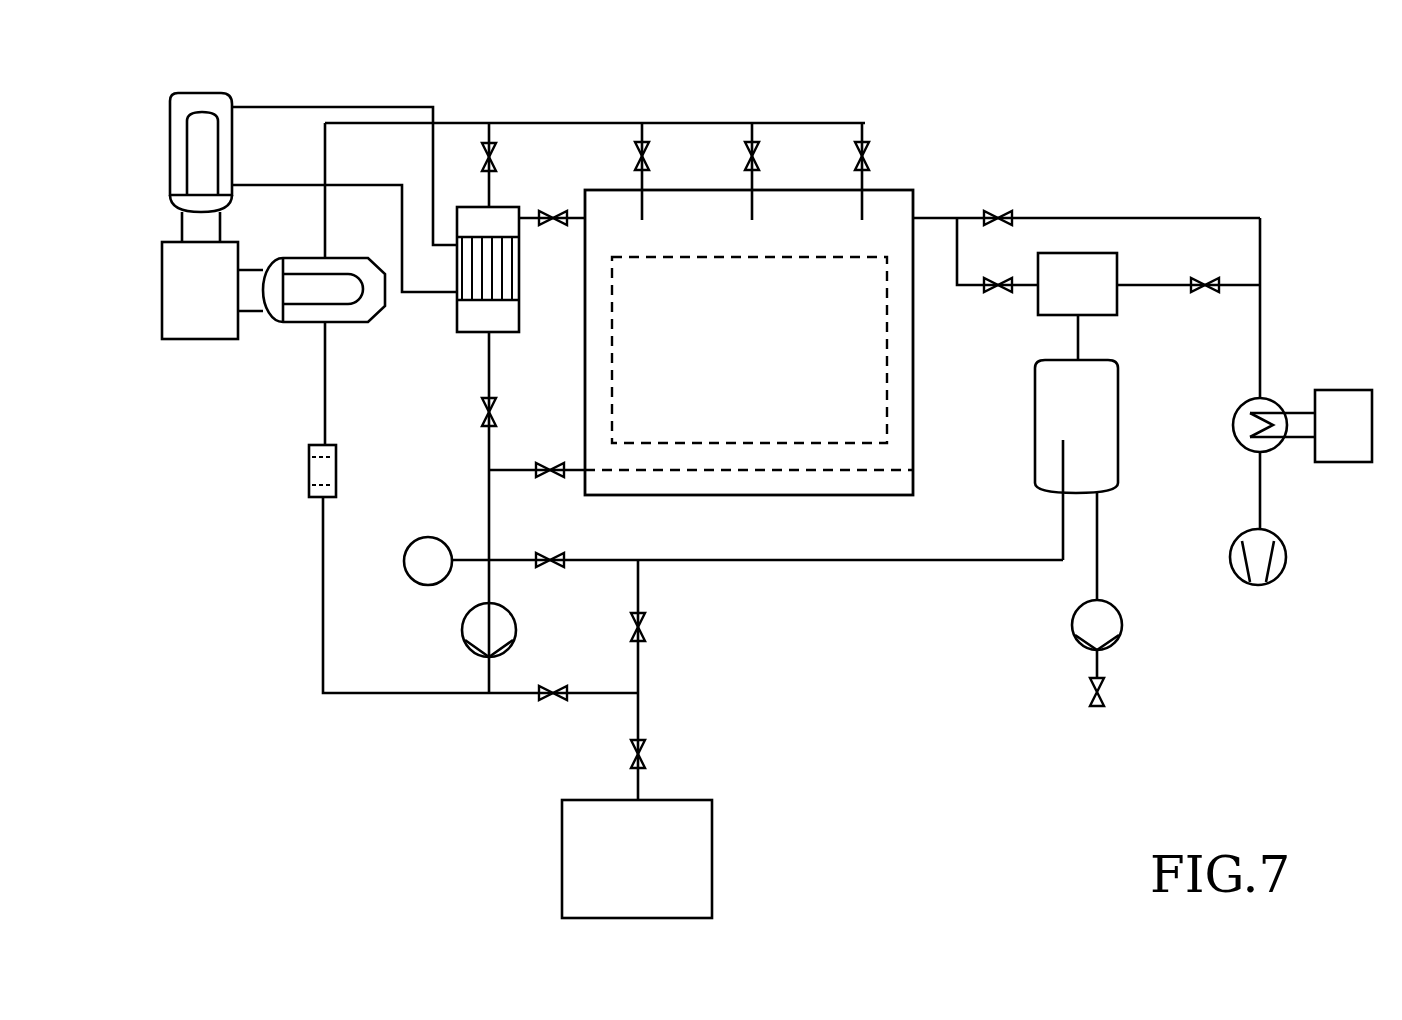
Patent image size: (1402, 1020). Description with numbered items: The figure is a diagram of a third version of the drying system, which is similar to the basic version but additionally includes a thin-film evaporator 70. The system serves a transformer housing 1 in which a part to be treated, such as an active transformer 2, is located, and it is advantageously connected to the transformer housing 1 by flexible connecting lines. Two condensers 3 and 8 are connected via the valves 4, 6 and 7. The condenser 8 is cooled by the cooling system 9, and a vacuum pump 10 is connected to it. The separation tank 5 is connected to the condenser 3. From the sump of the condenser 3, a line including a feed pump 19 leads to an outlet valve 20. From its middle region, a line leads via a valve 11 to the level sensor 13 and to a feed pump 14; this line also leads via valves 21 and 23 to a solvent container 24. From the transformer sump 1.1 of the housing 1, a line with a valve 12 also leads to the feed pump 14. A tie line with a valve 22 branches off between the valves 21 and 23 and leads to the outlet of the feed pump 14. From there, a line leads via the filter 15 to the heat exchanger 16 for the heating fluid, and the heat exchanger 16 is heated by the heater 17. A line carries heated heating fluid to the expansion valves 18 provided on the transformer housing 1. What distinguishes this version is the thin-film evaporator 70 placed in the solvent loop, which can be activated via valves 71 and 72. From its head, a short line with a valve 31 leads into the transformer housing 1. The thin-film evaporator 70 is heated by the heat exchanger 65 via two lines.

The transformer housing 1 is at (913, 355).
The transformer sump 1.1 is at (718, 482).
The active transformer 2 is at (608, 372).
The condenser 3 is at (1108, 300).
The valve 4 is at (998, 296).
The separation tank 5 is at (1112, 432).
The valve 6 is at (1205, 296).
The valve 7 is at (998, 208).
The condenser 8 is at (1233, 425).
The cooling system 9 is at (1343, 396).
The vacuum pump 10 is at (1230, 557).
The valve 11 is at (548, 574).
The valve 12 is at (552, 457).
The level sensor 13 is at (405, 565).
The feed pump 14 is at (462, 628).
The filter 15 is at (338, 472).
The heat exchanger 16 is at (340, 288).
The heater 17 is at (200, 322).
The expansion valves 18 is at (634, 158).
The feed pump 19 is at (1112, 628).
The outlet valve 20 is at (1105, 695).
The valve 21 is at (646, 628).
The valve 22 is at (551, 706).
The valve 23 is at (630, 755).
The solvent container 24 is at (672, 822).
The valve 31 is at (553, 230).
The heat exchanger 65 is at (203, 135).
The thin-film evaporator 70 is at (515, 285).
The valve 71 is at (497, 160).
The valve 72 is at (481, 411).